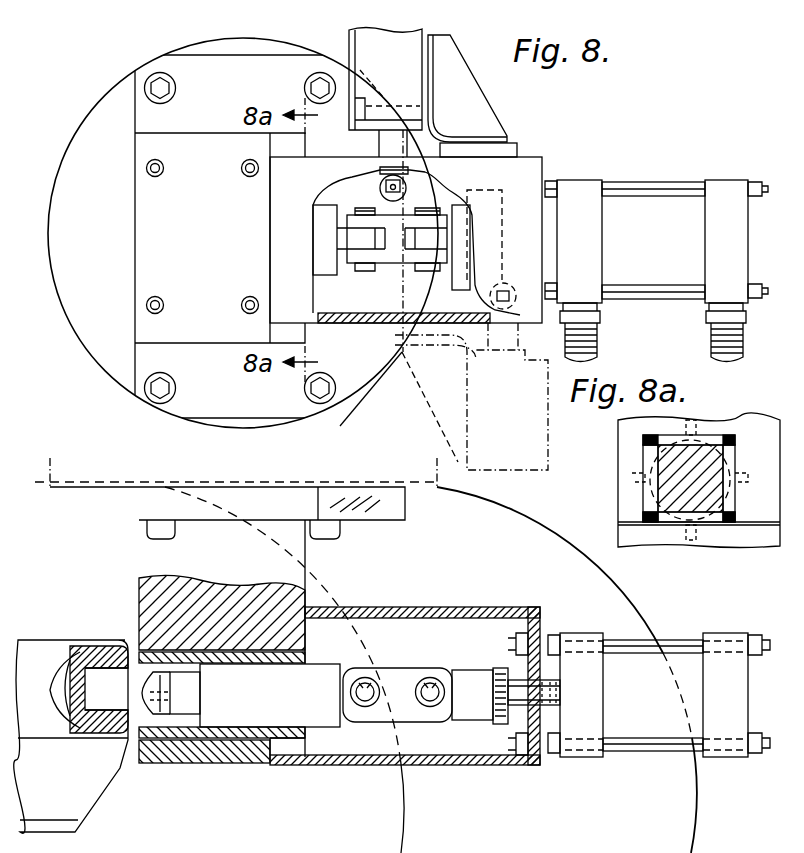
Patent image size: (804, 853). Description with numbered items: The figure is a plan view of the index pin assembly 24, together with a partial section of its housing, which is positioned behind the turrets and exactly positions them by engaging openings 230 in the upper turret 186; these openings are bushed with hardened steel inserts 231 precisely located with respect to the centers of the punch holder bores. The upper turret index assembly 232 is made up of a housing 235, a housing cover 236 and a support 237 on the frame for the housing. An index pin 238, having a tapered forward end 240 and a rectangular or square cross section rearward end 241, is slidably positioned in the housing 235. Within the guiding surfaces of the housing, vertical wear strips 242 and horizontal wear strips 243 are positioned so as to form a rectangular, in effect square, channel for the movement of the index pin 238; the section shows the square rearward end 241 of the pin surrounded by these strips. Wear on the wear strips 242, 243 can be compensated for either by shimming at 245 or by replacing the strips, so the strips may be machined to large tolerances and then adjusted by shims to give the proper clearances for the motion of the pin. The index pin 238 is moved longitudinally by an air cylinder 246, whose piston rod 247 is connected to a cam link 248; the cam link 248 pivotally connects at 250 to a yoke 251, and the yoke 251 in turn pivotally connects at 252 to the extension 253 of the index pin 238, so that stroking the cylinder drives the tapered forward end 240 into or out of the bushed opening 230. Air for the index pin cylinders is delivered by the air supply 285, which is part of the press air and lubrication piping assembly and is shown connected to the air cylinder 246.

In FIG. 8, the index pin assembly 24 is at (90, 100).
In FIG. 8, the upper turret 186 is at (27, 645).
In FIG. 8, the openings 230 is at (97, 693).
In FIG. 8, the hardened steel inserts 231 is at (113, 663).
In FIG. 8, the upper turret index assembly 232 is at (204, 786).
In FIG. 8, the housing 235 is at (305, 605).
In FIG. 8A, the housing 235 is at (628, 445).
In FIG. 8, the housing cover 236 is at (525, 173).
In FIG. 8, the support 237 is at (468, 105).
In FIG. 8, the index pin 238 is at (322, 248).
In FIG. 8A, the index pin 238 is at (665, 493).
In FIG. 8, the tapered forward end 240 is at (153, 707).
In FIG. 8, the rearward end 241 is at (328, 738).
In FIG. 8A, the vertical wear strips 242 is at (648, 500).
In FIG. 8, the horizontal wear strips 243 is at (216, 652).
In FIG. 8A, the horizontal wear strips 243 is at (710, 440).
In FIG. 8A, the shimming 245 is at (640, 437).
In FIG. 8, the air cylinder 246 is at (640, 684).
In FIG. 8, the piston rod 247 is at (550, 692).
In FIG. 8, the cam link 248 is at (427, 240).
In FIG. 8, the pivotal connection 250 is at (430, 688).
In FIG. 8, the yoke 251 is at (397, 257).
In FIG. 8, the pivotal connection 252 is at (352, 203).
In FIG. 8, the extension 253 is at (348, 237).
In FIG. 8, the air supply 285 is at (597, 342).